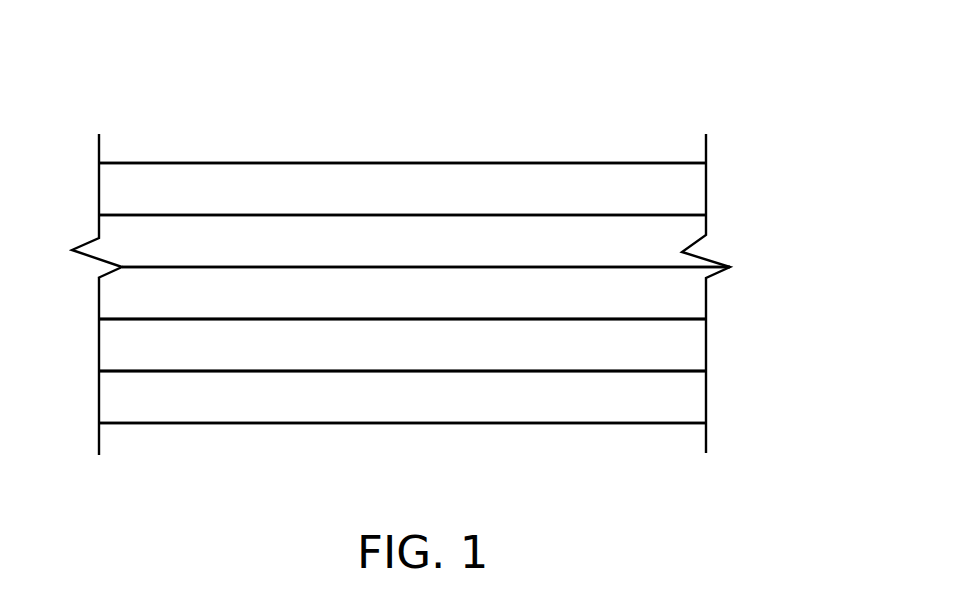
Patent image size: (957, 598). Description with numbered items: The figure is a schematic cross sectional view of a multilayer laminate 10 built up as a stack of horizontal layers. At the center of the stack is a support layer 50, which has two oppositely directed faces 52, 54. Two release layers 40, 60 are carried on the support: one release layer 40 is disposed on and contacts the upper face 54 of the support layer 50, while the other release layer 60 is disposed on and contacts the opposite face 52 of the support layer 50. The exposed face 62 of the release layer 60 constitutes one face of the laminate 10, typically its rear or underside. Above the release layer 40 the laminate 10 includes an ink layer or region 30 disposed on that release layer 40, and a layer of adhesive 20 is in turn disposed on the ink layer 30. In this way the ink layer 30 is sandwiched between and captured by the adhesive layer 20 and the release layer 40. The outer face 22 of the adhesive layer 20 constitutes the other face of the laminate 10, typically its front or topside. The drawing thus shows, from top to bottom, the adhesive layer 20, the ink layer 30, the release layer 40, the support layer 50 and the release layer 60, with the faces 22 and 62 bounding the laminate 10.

The multilayer laminate 10 is at (108, 82).
The adhesive layer 20 is at (690, 188).
The outer face of the adhesive layer 22 is at (527, 162).
The ink layer 30 is at (678, 235).
The release layer 40 is at (682, 302).
The support layer 50 is at (682, 345).
The face of the support layer 52 is at (133, 371).
The face of the support layer 54 is at (145, 319).
The release layer 60 is at (682, 400).
The exposed face of the release layer 62 is at (500, 423).